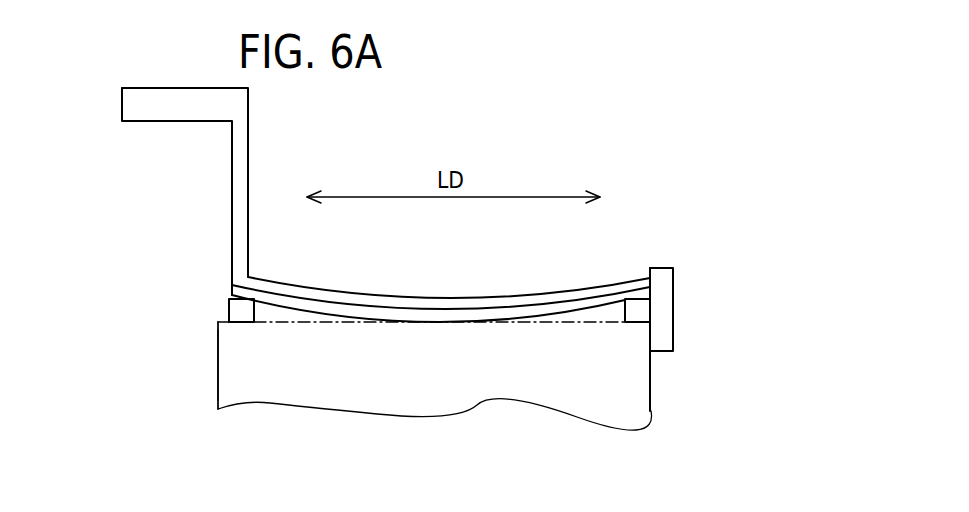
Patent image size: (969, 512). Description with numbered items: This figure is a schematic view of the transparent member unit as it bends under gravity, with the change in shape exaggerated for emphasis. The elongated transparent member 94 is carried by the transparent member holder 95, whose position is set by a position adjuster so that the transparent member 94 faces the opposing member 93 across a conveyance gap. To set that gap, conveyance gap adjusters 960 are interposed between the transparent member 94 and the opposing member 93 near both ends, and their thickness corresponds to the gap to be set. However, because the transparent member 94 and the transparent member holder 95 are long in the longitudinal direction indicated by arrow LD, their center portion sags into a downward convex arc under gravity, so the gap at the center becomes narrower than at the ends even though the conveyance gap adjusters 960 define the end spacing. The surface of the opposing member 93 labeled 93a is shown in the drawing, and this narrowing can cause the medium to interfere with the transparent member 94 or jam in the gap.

The transparent member holder 95 is at (236, 193).
The transparent member 94 is at (437, 322).
The conveyance gap adjuster 960 is at (250, 314).
The opposing member 93 is at (197, 363).
The side surface of base body 93a is at (217, 388).